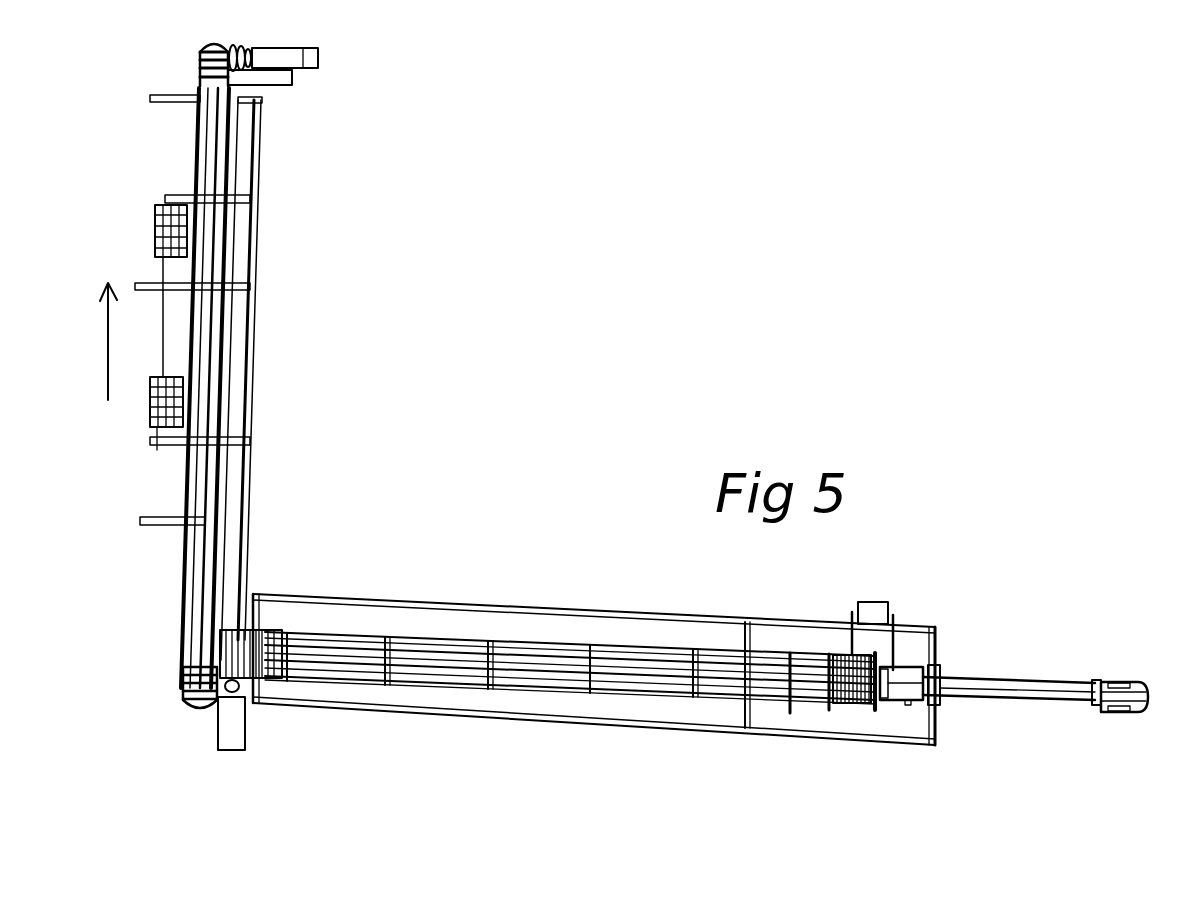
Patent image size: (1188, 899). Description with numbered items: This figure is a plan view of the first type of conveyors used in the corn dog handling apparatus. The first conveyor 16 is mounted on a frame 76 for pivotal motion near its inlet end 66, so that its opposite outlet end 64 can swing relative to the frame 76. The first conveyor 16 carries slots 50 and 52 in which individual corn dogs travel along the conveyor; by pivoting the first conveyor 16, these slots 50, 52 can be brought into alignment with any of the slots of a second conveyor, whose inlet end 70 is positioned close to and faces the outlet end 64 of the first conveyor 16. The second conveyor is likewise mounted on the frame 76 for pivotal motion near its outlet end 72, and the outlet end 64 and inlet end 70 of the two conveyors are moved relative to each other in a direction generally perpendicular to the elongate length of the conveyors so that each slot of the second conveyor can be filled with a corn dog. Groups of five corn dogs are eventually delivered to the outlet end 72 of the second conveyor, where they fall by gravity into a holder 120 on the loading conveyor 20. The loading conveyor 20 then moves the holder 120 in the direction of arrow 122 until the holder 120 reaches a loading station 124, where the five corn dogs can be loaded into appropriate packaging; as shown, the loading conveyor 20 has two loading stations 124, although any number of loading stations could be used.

The first conveyor 16 is at (1009, 671).
The loading conveyor 20 is at (262, 388).
The slot 50 is at (1058, 683).
The slot 52 is at (1062, 700).
The outlet end 64 is at (900, 703).
The inlet end 66 is at (1142, 678).
The inlet end 70 is at (843, 713).
The outlet end 72 is at (283, 608).
The frame 76 is at (613, 610).
The holder 120 is at (180, 682).
The arrow 122 is at (110, 374).
The loading station 124 is at (152, 231).